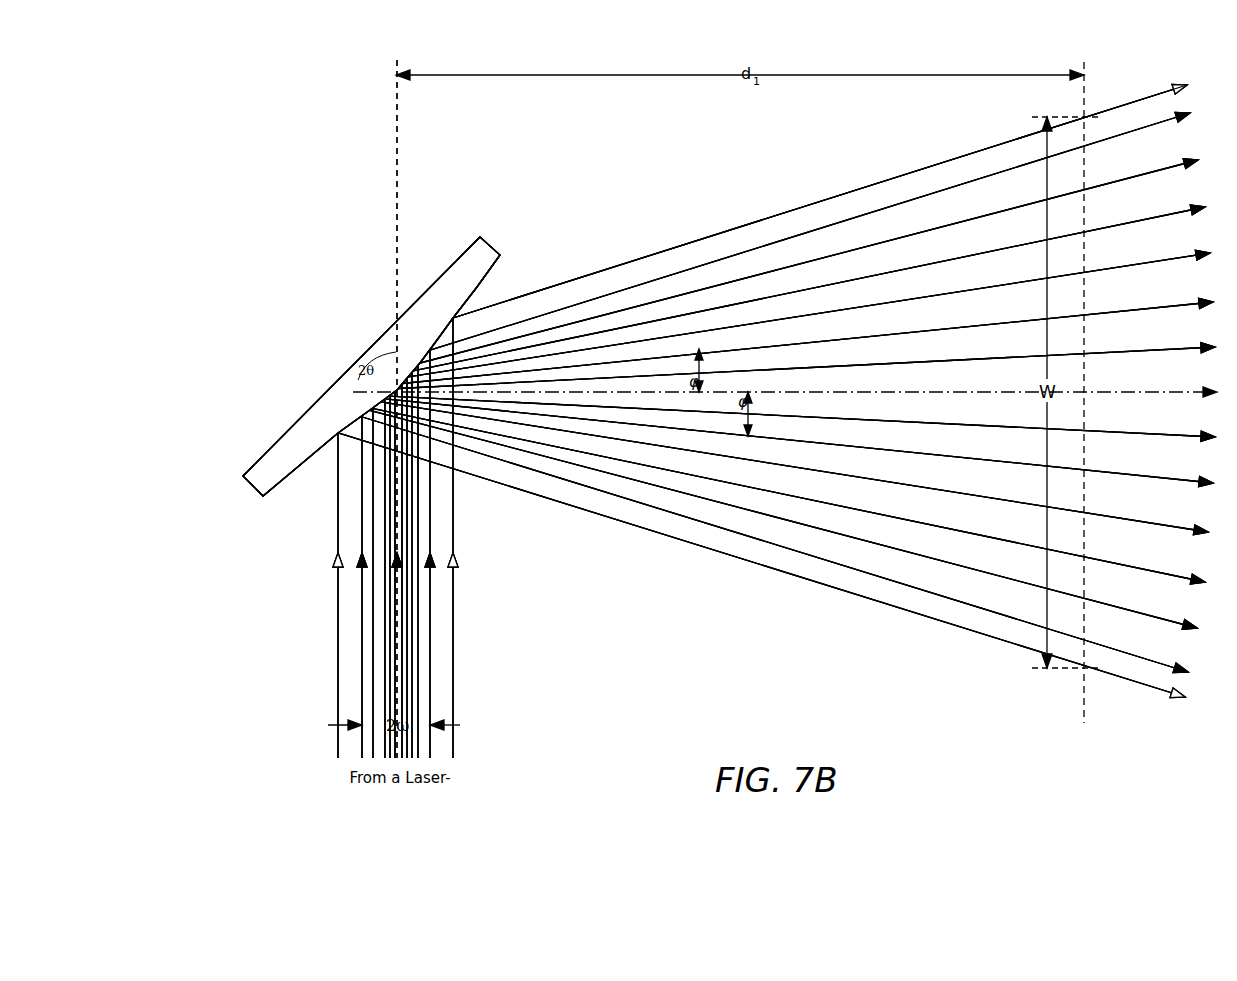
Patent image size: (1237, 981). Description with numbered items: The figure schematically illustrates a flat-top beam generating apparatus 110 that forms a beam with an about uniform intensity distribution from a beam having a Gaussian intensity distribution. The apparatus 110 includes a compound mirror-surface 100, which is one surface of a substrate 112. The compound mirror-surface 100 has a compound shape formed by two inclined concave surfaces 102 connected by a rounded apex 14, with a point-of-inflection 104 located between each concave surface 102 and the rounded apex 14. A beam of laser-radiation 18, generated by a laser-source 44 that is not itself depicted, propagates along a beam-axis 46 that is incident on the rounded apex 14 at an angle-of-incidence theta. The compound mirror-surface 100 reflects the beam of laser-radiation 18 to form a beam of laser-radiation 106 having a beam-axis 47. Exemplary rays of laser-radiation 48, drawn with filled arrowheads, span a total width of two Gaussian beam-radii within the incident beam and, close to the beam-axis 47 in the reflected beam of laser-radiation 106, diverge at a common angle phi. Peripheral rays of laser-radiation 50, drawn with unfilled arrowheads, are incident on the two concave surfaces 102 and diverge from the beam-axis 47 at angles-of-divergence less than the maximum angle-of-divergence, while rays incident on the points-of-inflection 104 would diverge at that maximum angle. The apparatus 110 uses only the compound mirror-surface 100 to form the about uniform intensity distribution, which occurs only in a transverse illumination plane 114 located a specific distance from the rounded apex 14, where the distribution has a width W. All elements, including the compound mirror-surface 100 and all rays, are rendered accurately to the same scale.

The flat-top beam generating apparatus 110 is at (330, 132).
The compound mirror-surface 100 is at (312, 478).
The concave surface 102 is at (488, 272).
The point-of-inflection 104 is at (442, 275).
The substrate 112 is at (380, 340).
The rounded apex 14 is at (311, 404).
The beam of laser-radiation 18 is at (323, 703).
The peripheral rays of laser-radiation 50 is at (337, 652).
The beam-axis 47 is at (548, 393).
The exemplary rays of laser-radiation 48 is at (420, 620).
The beam-axis 46 is at (400, 652).
The beam of laser-radiation 106 is at (831, 180).
The transverse illumination plane 114 is at (1084, 707).
The laser-source 44 is at (399, 798).